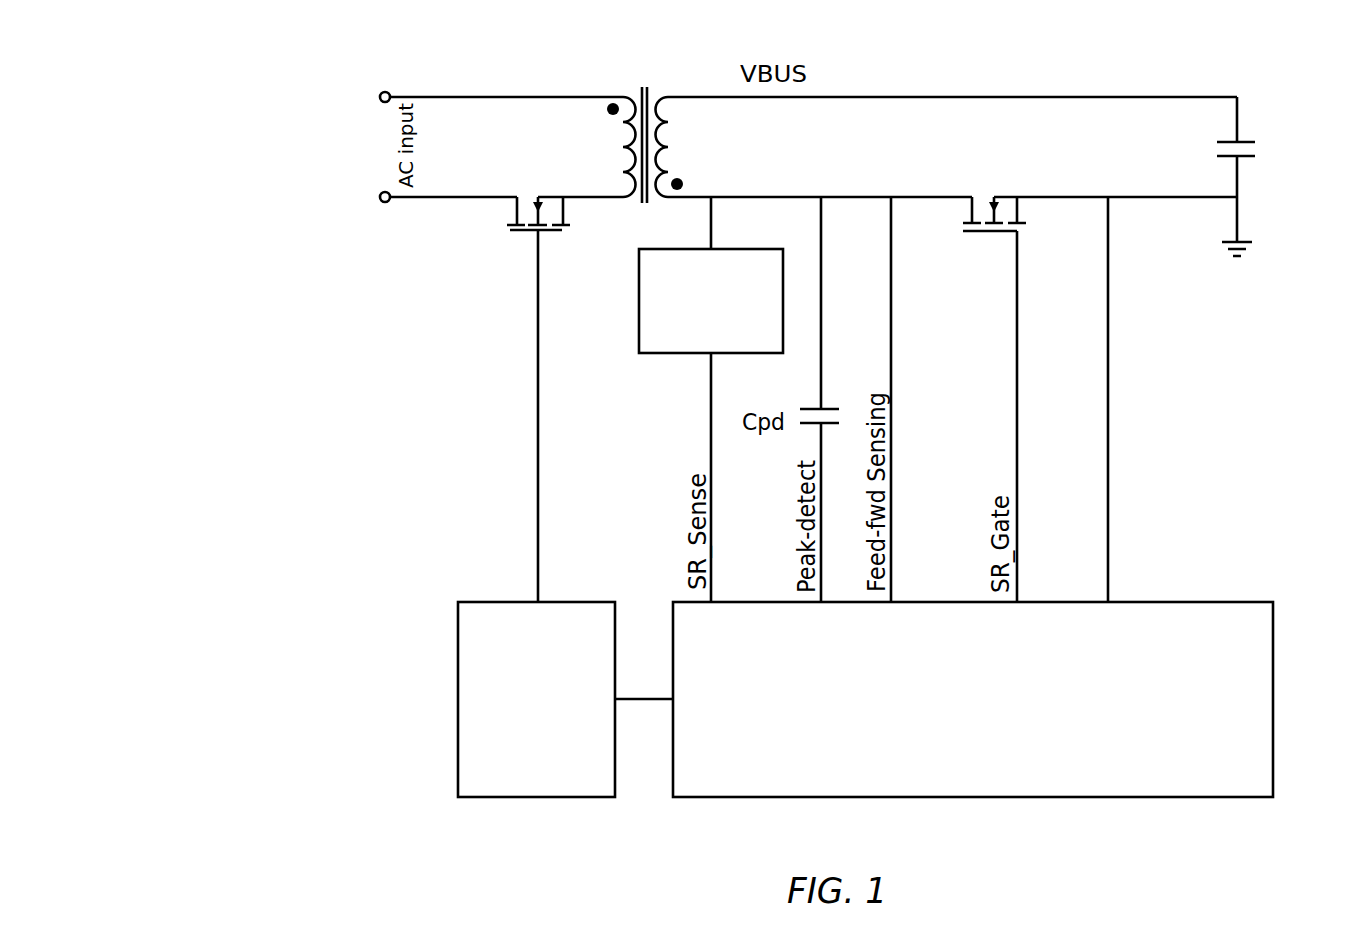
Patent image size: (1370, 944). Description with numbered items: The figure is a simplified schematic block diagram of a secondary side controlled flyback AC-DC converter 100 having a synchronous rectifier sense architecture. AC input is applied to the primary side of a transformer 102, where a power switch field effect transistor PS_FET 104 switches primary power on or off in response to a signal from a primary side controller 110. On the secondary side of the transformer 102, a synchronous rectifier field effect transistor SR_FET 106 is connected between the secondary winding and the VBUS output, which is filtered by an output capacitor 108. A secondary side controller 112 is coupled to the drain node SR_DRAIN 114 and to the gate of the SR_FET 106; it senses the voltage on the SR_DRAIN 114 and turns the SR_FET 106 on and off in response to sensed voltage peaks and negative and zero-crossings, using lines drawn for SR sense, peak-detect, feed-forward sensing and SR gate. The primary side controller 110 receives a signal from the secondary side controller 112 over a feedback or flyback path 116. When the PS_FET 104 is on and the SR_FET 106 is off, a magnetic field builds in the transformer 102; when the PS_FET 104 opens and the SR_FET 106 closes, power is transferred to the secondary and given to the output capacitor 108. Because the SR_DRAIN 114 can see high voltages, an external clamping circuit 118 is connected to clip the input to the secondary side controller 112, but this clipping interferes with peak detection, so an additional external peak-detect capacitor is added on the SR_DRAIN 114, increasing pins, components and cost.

The AC-DC converter 100 is at (298, 46).
The transformer 102 is at (642, 72).
The PS_FET 104 is at (535, 170).
The SR_FET 106 is at (992, 170).
The output capacitor 108 is at (1247, 142).
The primary side controller 110 is at (518, 775).
The secondary side controller 112 is at (978, 767).
The SR_DRAIN 114 is at (952, 179).
The feedback or flyback path 116 is at (647, 700).
The external clamping circuit 118 is at (652, 354).